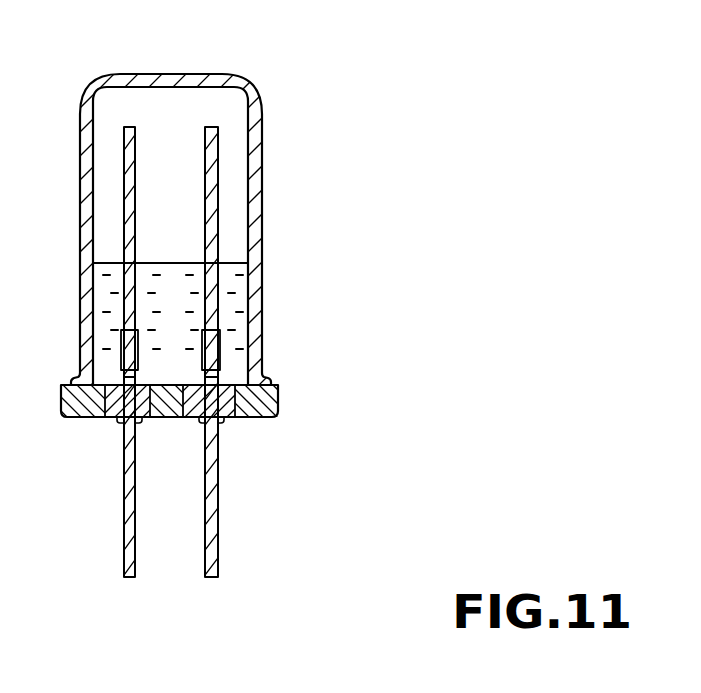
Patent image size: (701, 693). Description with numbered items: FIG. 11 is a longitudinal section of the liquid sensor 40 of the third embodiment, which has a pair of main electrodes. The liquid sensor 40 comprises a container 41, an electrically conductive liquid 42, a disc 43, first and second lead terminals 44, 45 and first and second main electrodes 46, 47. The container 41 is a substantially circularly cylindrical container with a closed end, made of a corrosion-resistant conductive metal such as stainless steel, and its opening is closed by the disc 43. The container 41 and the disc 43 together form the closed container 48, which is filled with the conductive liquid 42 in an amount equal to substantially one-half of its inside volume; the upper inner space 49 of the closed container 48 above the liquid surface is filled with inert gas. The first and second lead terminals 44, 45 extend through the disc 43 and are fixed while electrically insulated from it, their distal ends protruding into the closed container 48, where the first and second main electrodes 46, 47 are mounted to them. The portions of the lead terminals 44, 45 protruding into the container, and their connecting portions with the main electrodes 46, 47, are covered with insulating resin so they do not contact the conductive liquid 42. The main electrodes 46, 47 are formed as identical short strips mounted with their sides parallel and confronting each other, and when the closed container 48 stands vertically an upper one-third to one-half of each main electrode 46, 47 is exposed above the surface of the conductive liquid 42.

The liquid sensor 40 is at (299, 312).
The container 41 is at (253, 332).
The electrically conductive liquid 42 is at (233, 287).
The disc 43 is at (270, 390).
The first lead terminal 44 is at (125, 562).
The second lead terminal 45 is at (210, 560).
The first main electrode 46 is at (132, 125).
The second main electrode 47 is at (213, 125).
The closed container 48 is at (299, 246).
The gas space 49 is at (232, 258).